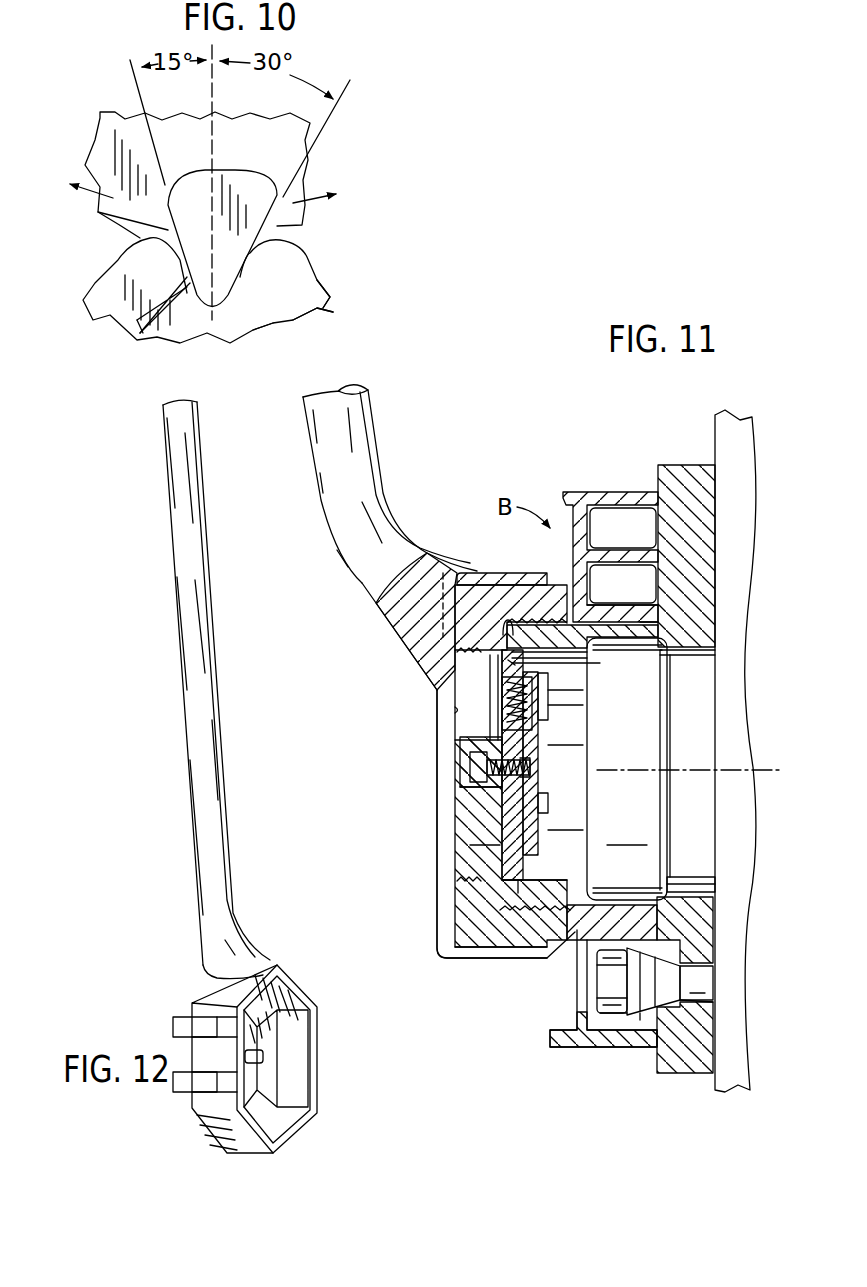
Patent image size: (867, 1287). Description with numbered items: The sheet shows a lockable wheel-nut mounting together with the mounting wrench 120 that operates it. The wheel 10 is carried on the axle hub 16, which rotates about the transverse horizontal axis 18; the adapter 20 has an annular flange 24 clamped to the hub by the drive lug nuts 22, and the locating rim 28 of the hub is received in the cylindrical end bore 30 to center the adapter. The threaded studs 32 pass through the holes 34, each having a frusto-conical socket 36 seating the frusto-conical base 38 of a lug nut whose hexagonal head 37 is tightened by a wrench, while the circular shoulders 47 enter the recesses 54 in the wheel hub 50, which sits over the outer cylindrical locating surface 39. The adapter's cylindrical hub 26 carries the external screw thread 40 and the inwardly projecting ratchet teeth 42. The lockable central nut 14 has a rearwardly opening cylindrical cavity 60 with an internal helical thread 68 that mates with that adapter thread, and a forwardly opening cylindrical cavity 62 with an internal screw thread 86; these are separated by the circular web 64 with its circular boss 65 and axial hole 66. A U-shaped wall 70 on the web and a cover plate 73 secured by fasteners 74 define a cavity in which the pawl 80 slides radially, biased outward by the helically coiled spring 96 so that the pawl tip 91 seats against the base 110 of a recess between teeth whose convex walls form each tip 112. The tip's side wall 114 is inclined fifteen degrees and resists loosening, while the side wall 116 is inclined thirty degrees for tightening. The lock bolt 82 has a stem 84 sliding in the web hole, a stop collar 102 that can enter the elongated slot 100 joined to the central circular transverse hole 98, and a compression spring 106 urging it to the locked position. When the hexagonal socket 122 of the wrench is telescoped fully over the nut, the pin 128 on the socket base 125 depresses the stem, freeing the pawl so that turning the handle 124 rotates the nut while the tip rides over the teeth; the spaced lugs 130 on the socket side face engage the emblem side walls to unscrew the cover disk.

In FIG. 11, the wheel 10 is at (598, 485).
In FIG. 11, the lockable central nut 14 is at (478, 948).
In FIG. 11, the axle hub 16 is at (722, 1095).
In FIG. 11, the transverse horizontal axis 18 is at (728, 770).
In FIG. 10, the adapter 20 is at (333, 295).
In FIG. 11, the adapter 20 is at (680, 460).
In FIG. 11, the drive lug nuts 22 is at (630, 1022).
In FIG. 11, the annular flange 24 is at (673, 1074).
In FIG. 10, the cylindrical hub 26 is at (333, 310).
In FIG. 11, the cylindrical hub 26 is at (637, 622).
In FIG. 11, the locating rim 28 is at (698, 710).
In FIG. 11, the cylindrical end bore 30 is at (698, 895).
In FIG. 11, the threaded studs 32 is at (703, 977).
In FIG. 11, the holes 34 is at (703, 998).
In FIG. 11, the frusto-conical socket 36 is at (670, 1008).
In FIG. 11, the hexagonal head 37 is at (610, 1014).
In FIG. 11, the frusto-conical base 38 is at (670, 957).
In FIG. 11, the outer cylindrical locating surface 39 is at (613, 617).
In FIG. 11, the external screw thread 40 is at (537, 610).
In FIG. 10, the ratchet teeth 42 is at (143, 263).
In FIG. 11, the ratchet teeth 42 is at (568, 885).
In FIG. 11, the circular shoulders 47 is at (642, 1020).
In FIG. 11, the wheel hub 50 is at (647, 927).
In FIG. 11, the recesses 54 is at (586, 1018).
In FIG. 11, the rearwardly opening cylindrical cavity 60 is at (477, 907).
In FIG. 11, the forwardly opening cylindrical cavity 62 is at (477, 860).
In FIG. 11, the circular web 64 is at (477, 877).
In FIG. 11, the circular boss 65 is at (477, 825).
In FIG. 11, the axial hole 66 is at (463, 757).
In FIG. 11, the internal helical thread 68 is at (500, 640).
In FIG. 11, the U-shaped wall 70 is at (456, 709).
In FIG. 11, the cover plate 73 is at (568, 838).
In FIG. 11, the fasteners 74 is at (545, 712).
In FIG. 10, the pawl 80 is at (313, 133).
In FIG. 11, the pawl 80 is at (467, 847).
In FIG. 11, the lock bolt 82 is at (460, 740).
In FIG. 11, the stem 84 is at (477, 797).
In FIG. 11, the internal screw thread 86 is at (505, 655).
In FIG. 10, the pawl tip 91 is at (143, 333).
In FIG. 11, the pawl tip 91 is at (518, 893).
In FIG. 11, the helically coiled spring 96 is at (547, 702).
In FIG. 11, the central circular transverse hole 98 is at (540, 733).
In FIG. 11, the elongated slot 100 is at (518, 817).
In FIG. 11, the stop collar 102 is at (543, 752).
In FIG. 11, the compression spring 106 is at (540, 773).
In FIG. 10, the base 110 is at (232, 313).
In FIG. 10, the tip 112 is at (140, 238).
In FIG. 10, the side wall 114 is at (140, 333).
In FIG. 10, the side wall 116 is at (270, 325).
In FIG. 11, the mounting wrench 120 is at (356, 588).
In FIG. 12, the mounting wrench 120 is at (192, 856).
In FIG. 11, the hexagonal socket 122 is at (467, 963).
In FIG. 12, the hexagonal socket 122 is at (293, 985).
In FIG. 11, the handle 124 is at (370, 445).
In FIG. 12, the handle 124 is at (203, 890).
In FIG. 11, the base 125 is at (463, 718).
In FIG. 12, the base 125 is at (267, 1032).
In FIG. 11, the pin 128 is at (460, 777).
In FIG. 12, the pin 128 is at (267, 1058).
In FIG. 12, the lugs 130 is at (173, 1080).